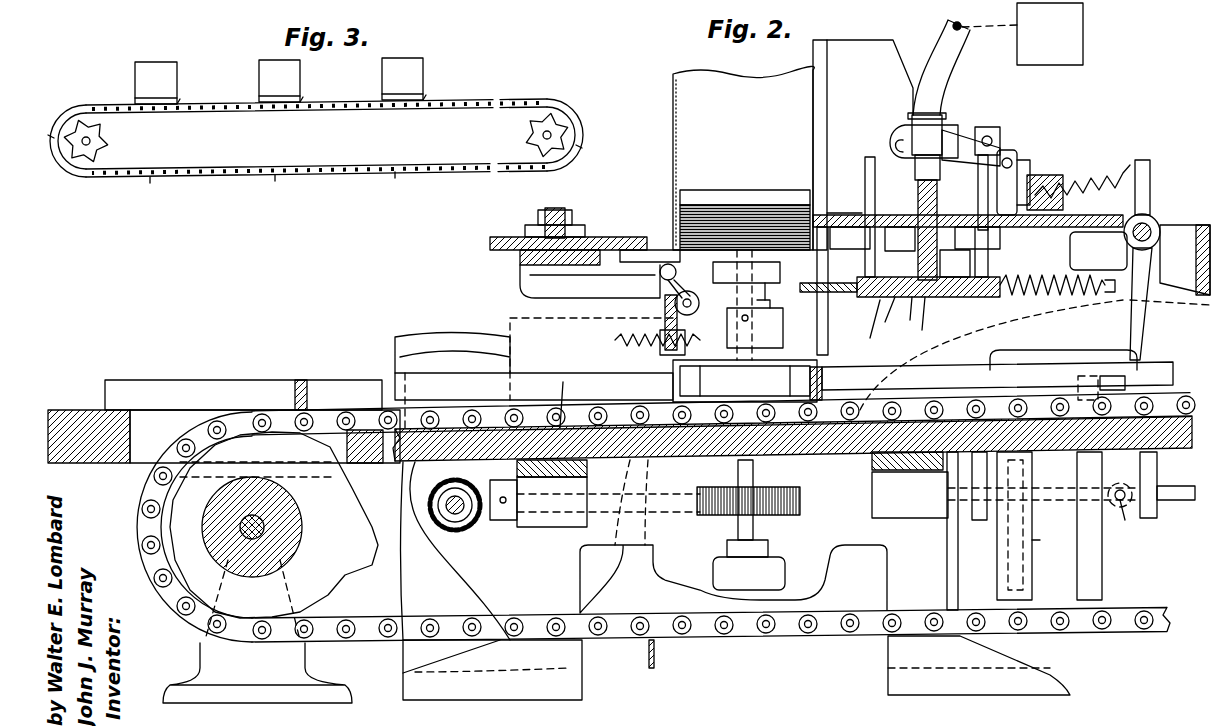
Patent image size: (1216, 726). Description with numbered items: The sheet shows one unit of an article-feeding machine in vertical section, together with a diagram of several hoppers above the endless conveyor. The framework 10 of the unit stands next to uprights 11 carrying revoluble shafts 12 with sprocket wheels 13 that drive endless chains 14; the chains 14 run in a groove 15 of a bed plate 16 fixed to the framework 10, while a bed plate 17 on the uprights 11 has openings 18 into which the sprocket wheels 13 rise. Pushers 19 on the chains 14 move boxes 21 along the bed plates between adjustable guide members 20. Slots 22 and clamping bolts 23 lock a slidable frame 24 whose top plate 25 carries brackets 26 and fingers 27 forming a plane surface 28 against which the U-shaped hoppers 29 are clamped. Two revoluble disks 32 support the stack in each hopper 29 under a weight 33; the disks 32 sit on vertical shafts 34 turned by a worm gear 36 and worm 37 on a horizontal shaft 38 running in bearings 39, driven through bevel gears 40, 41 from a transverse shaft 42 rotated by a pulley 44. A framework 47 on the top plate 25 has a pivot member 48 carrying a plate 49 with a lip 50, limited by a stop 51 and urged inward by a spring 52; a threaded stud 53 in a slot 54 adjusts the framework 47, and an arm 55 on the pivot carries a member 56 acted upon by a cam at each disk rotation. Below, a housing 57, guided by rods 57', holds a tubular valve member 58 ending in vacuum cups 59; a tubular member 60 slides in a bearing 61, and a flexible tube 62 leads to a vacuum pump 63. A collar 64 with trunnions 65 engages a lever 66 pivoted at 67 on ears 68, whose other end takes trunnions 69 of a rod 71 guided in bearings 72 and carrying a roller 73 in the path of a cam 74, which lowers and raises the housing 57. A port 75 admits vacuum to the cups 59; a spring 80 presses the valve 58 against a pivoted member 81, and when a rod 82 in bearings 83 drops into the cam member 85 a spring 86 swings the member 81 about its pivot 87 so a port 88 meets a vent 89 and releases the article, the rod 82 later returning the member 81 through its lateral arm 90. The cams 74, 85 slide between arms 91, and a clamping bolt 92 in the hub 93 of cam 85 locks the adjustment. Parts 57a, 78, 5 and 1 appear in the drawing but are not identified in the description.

In FIG. 2, the shaft 5 is at (800, 288).
In FIG. 2, the framework 10 is at (582, 662).
In FIG. 2, the uprights 11 is at (330, 688).
In FIG. 3, the revoluble shafts 12 is at (84, 137).
In FIG. 2, the revoluble shafts 12 is at (238, 540).
In FIG. 3, the sprocket wheels 13 is at (110, 146).
In FIG. 2, the sprocket wheels 13 is at (340, 562).
In FIG. 3, the endless chains 14 is at (208, 109).
In FIG. 2, the endless chains 14 is at (590, 300).
In FIG. 2, the groove 15 is at (528, 428).
In FIG. 2, the bed plate 16 is at (563, 398).
In FIG. 2, the bed plate 17 is at (78, 412).
In FIG. 2, the openings 18 is at (150, 420).
In FIG. 3, the pushers 19 is at (318, 141).
In FIG. 2, the pushers 19 is at (822, 383).
In FIG. 2, the guide members 20 is at (240, 380).
In FIG. 3, the boxes or receptacles 21 is at (134, 102).
In FIG. 2, the boxes or receptacles 21 is at (673, 382).
In FIG. 2, the slots 22 is at (745, 485).
In FIG. 2, the clamping bolts 23 is at (749, 381).
In FIG. 2, the slidable frame 24 is at (832, 580).
In FIG. 2, the top plate 25 is at (838, 215).
In FIG. 2, the brackets 26 is at (862, 40).
In FIG. 2, the fingers 27 is at (828, 338).
In FIG. 2, the vertical plane surface 28 is at (813, 50).
In FIG. 3, the hoppers 29 is at (178, 73).
In FIG. 2, the hoppers 29 is at (673, 138).
In FIG. 2, the revoluble disks 32 is at (634, 250).
In FIG. 2, the weight 33 is at (745, 190).
In FIG. 2, the vertical shafts 34 is at (753, 466).
In FIG. 2, the worm gear 36 is at (775, 488).
In FIG. 2, the worm 37 is at (785, 513).
In FIG. 2, the horizontal shaft 38 is at (631, 502).
In FIG. 2, the bearings 39 is at (550, 518).
In FIG. 2, the bevel gear 40 is at (492, 518).
In FIG. 2, the bevel gear 41 is at (455, 515).
In FIG. 2, the transverse shaft 42 is at (450, 515).
In FIG. 2, the pulley 44 is at (437, 337).
In FIG. 2, the framework 47 is at (520, 262).
In FIG. 2, the pivot member 48 is at (660, 276).
In FIG. 2, the plate 49 is at (689, 284).
In FIG. 2, the lip or shelf 50 is at (686, 333).
In FIG. 2, the stop 51 is at (699, 303).
In FIG. 2, the spring 52 is at (665, 307).
In FIG. 2, the threaded stud 53 is at (555, 208).
In FIG. 2, the slot 54 is at (585, 226).
In FIG. 2, the arm 55 is at (660, 326).
In FIG. 2, the member 56 is at (796, 322).
In FIG. 2, the housing 57 is at (884, 314).
In FIG. 2, the rods 57' is at (944, 216).
In FIG. 2, the member 57a is at (749, 313).
In FIG. 2, the tubular valve member 58 is at (826, 314).
In FIG. 2, the vacuum cups 59 is at (746, 272).
In FIG. 2, the tubular member 60 is at (915, 166).
In FIG. 2, the bearing 61 is at (956, 263).
In FIG. 2, the flexible tube 62 is at (938, 58).
In FIG. 2, the vacuum pump 63 is at (1041, 34).
In FIG. 2, the collar 64 is at (912, 125).
In FIG. 2, the trunnions 65 is at (900, 132).
In FIG. 2, the lever 66 is at (985, 130).
In FIG. 2, the pivot 67 is at (1022, 158).
In FIG. 2, the ears 68 is at (1007, 150).
In FIG. 2, the trunnions 69 is at (1055, 178).
In FIG. 2, the rod 71 is at (1063, 360).
In FIG. 2, the bearings 72 is at (1052, 274).
In FIG. 2, the roller 73 is at (1032, 518).
In FIG. 2, the cam 74 is at (1032, 555).
In FIG. 2, the port 75 is at (909, 316).
In FIG. 2, the block 78 is at (1162, 283).
In FIG. 2, the spring 80 is at (1075, 296).
In FIG. 2, the pivoted member 81 is at (1170, 294).
In FIG. 2, the rod 82 is at (1112, 379).
In FIG. 2, the bearings 83 is at (1078, 375).
In FIG. 2, the cam member 85 is at (1102, 565).
In FIG. 2, the spring 86 is at (1095, 175).
In FIG. 2, the pivot 87 is at (1150, 212).
In FIG. 2, the port 88 is at (924, 322).
In FIG. 2, the vent 89 is at (991, 355).
In FIG. 2, the lateral arm 90 is at (1098, 252).
In FIG. 2, the arms 91 is at (980, 520).
In FIG. 2, the clamping bolt 92 is at (1126, 522).
In FIG. 2, the hub 93 is at (1120, 480).
In FIG. 2, the frame beam 1 is at (792, 438).